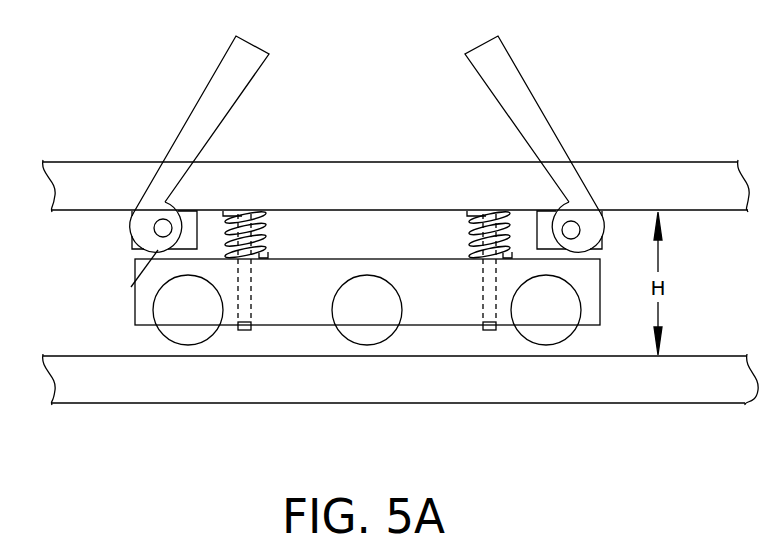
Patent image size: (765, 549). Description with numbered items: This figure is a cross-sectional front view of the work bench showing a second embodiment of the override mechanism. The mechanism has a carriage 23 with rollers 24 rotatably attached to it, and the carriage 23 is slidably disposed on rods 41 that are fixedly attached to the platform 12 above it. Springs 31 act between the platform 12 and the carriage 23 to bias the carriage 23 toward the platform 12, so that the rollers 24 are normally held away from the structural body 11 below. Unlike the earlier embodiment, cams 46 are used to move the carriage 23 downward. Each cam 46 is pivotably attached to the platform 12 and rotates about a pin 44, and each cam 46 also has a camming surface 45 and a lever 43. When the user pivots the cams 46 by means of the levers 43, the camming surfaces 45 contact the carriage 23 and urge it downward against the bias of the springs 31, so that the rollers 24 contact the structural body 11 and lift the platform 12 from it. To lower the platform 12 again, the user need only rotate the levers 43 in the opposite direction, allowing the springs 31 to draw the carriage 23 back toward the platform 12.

The structural body 11 is at (147, 382).
The platform 12 is at (633, 188).
The carriage 23 is at (455, 306).
The rollers 24 is at (365, 332).
The springs 31 is at (270, 235).
The rods 41 is at (243, 332).
The levers 43 is at (230, 72).
The pin 44 is at (163, 219).
The camming surfaces 45 is at (137, 283).
The cams 46 is at (135, 223).